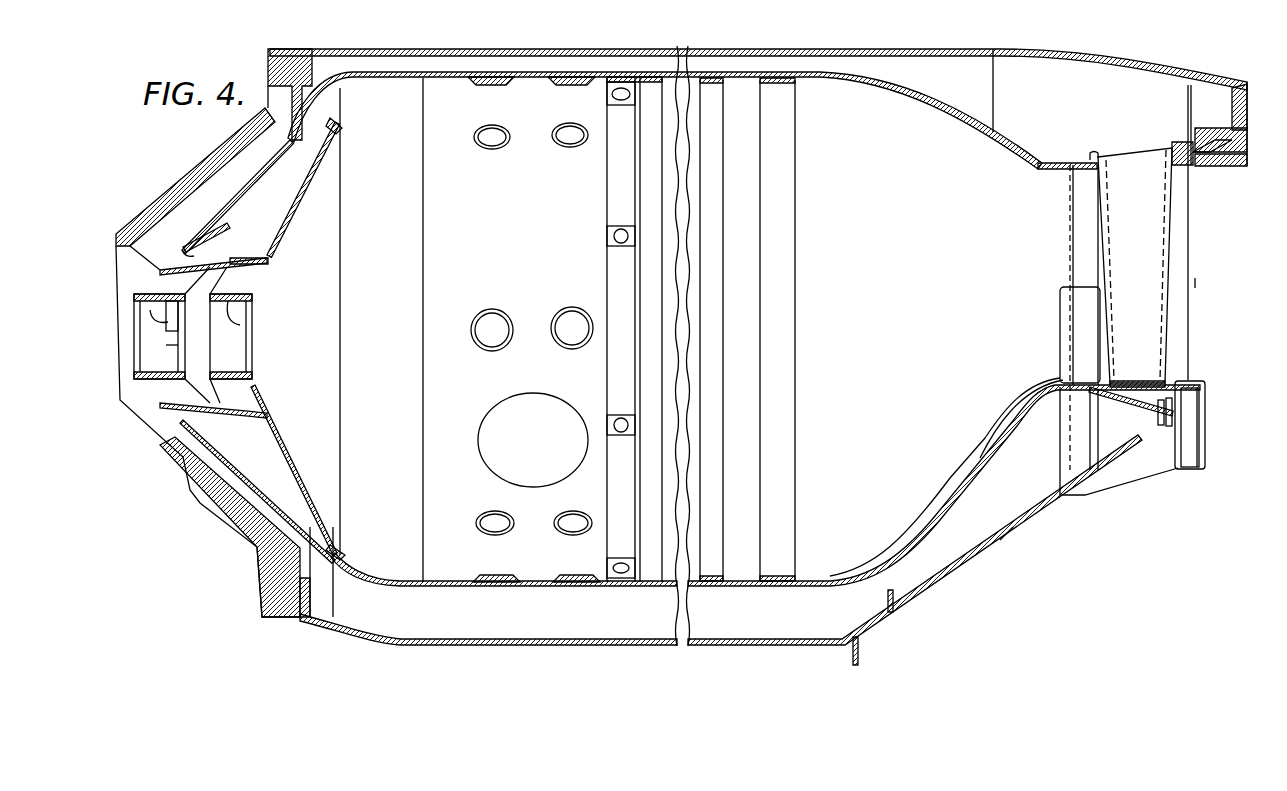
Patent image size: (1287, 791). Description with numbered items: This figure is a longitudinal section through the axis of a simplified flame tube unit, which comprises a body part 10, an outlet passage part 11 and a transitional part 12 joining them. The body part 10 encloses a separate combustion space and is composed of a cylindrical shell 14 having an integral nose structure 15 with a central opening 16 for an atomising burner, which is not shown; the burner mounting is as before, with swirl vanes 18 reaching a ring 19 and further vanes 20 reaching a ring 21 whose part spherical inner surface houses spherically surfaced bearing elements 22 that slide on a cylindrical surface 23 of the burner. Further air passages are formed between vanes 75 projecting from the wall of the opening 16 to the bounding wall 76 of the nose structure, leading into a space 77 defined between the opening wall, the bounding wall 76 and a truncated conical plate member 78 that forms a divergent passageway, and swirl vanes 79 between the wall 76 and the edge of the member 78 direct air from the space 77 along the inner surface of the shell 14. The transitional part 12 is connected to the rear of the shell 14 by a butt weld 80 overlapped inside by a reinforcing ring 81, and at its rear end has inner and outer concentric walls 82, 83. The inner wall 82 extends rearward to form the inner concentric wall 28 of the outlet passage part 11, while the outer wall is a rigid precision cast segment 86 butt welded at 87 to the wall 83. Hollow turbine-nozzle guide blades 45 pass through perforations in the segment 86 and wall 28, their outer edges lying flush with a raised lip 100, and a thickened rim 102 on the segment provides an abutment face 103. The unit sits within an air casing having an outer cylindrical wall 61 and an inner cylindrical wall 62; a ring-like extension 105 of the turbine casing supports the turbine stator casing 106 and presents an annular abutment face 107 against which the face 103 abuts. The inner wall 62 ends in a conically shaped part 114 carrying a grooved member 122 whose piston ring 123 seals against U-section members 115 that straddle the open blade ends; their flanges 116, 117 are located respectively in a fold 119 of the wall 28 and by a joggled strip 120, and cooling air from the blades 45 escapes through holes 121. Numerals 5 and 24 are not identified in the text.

The section line arrow 5 is at (1228, 283).
The body part 10 is at (466, 196).
The outlet passage part 11 is at (1062, 280).
The transitional part 12 is at (905, 97).
The cylindrical shell 14 is at (449, 581).
The nose structure 15 is at (308, 214).
The central opening 16 is at (247, 312).
The swirl vanes 18 is at (232, 313).
The ring 19 is at (252, 370).
The vanes 20 is at (166, 283).
The ring 21 is at (141, 295).
The bearing elements 22 is at (166, 312).
The cylindrical surface 23 is at (167, 333).
The notch 24 is at (495, 80).
The inner concentric wall 28 is at (1172, 378).
The turbine-nozzle guide blades 45 is at (1141, 243).
The outer cylindrical wall 61 is at (557, 58).
The inner cylindrical wall 62 is at (566, 642).
The vanes 75 is at (210, 250).
The bounding wall 76 is at (268, 176).
The space 77 is at (276, 211).
The truncated conical plate member 78 is at (296, 456).
The swirl vanes 79 is at (340, 128).
The butt weld 80 is at (786, 82).
The reinforcing ring 81 is at (784, 166).
The inner concentric wall 82 is at (1045, 385).
The outer concentric wall 83 is at (1025, 165).
The cast segment 86 is at (1085, 168).
The butt weld 87 is at (1072, 163).
The raised lip 100 is at (1090, 158).
The thickened rim 102 is at (1175, 148).
The abutment face 103 is at (1192, 172).
The ring-like extension 105 is at (1228, 130).
The turbine stator casing 106 is at (1225, 167).
The annular abutment face 107 is at (1188, 140).
The conically shaped part 114 is at (1035, 508).
The U-section members 115 is at (1131, 411).
The flange 116 is at (1204, 383).
The flange 117 is at (1092, 417).
The fold 119 is at (1200, 420).
The joggled strip 120 is at (1062, 418).
The holes 121 is at (1190, 395).
The grooved member 122 is at (1166, 427).
The piston ring 123 is at (1172, 428).